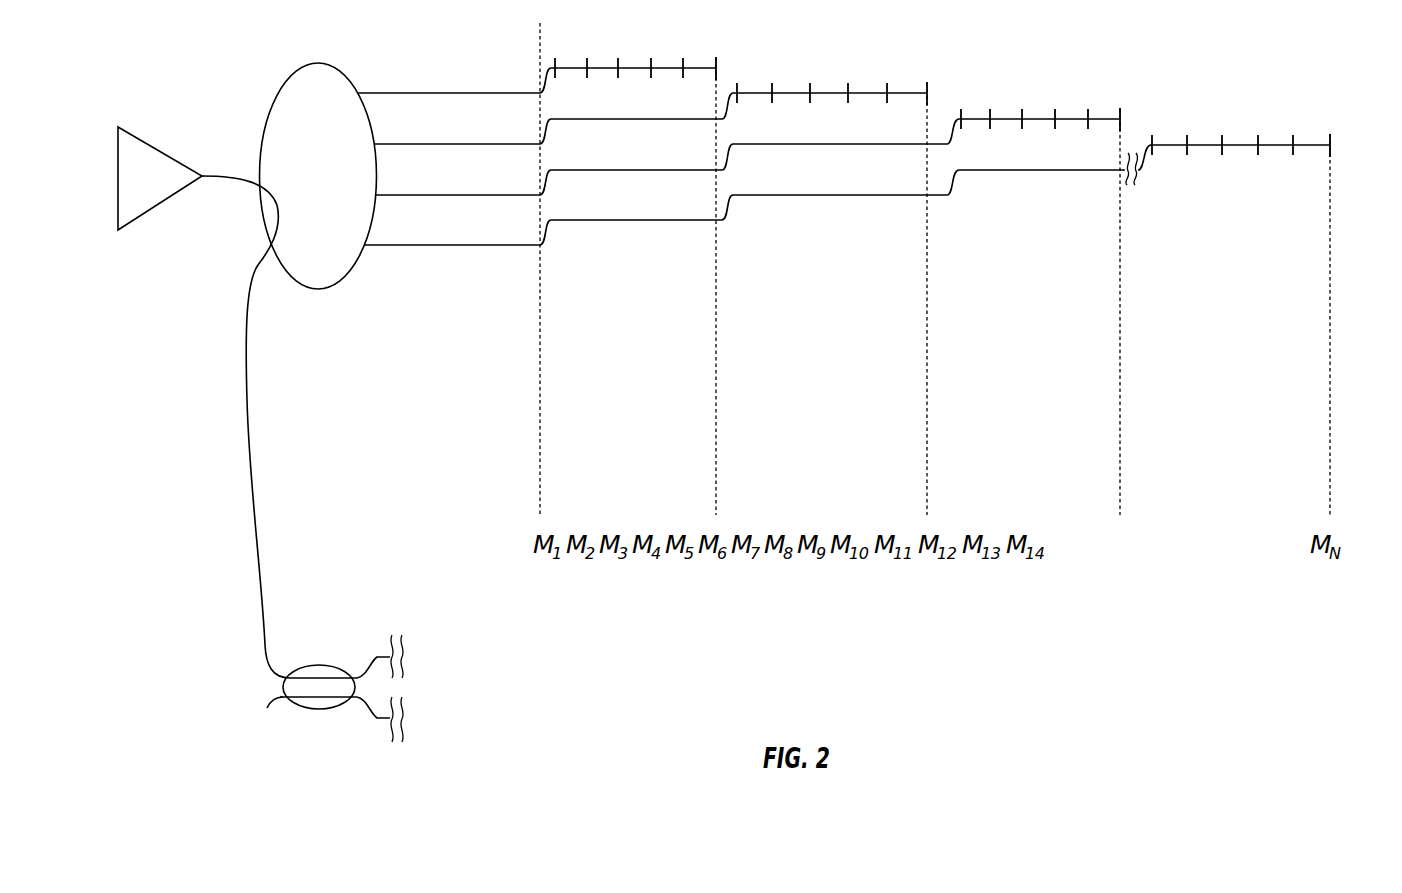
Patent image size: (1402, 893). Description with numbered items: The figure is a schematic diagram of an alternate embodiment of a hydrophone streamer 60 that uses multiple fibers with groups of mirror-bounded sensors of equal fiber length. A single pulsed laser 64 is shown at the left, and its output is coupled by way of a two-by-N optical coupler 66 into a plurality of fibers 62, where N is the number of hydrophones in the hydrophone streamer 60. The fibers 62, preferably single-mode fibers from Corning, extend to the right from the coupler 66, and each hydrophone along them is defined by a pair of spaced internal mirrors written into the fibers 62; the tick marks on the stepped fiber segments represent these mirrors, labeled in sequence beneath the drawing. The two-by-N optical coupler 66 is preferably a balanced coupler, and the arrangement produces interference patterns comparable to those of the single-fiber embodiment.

The hydrophone streamer 60 is at (1343, 103).
The fibers 62 is at (478, 92).
The pulsed laser 64 is at (148, 140).
The two-by-N optical coupler 66 is at (318, 289).